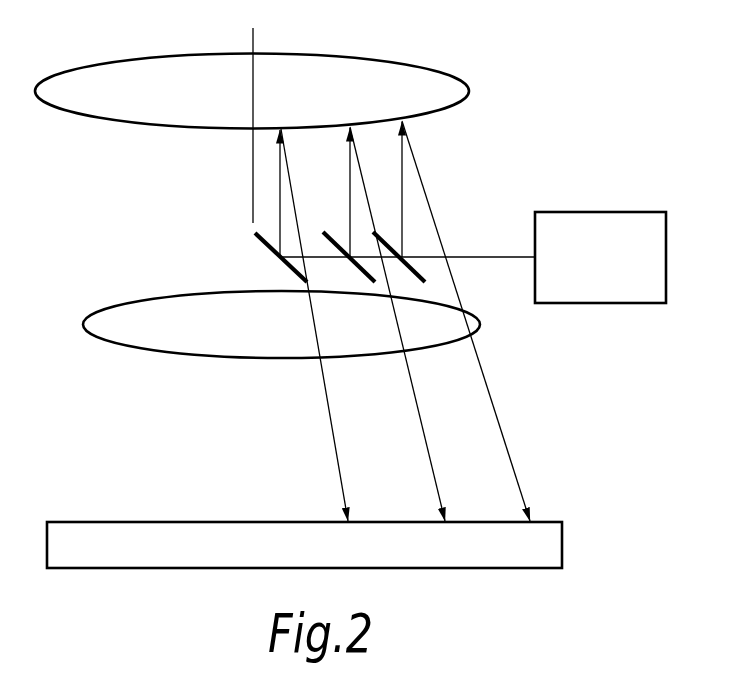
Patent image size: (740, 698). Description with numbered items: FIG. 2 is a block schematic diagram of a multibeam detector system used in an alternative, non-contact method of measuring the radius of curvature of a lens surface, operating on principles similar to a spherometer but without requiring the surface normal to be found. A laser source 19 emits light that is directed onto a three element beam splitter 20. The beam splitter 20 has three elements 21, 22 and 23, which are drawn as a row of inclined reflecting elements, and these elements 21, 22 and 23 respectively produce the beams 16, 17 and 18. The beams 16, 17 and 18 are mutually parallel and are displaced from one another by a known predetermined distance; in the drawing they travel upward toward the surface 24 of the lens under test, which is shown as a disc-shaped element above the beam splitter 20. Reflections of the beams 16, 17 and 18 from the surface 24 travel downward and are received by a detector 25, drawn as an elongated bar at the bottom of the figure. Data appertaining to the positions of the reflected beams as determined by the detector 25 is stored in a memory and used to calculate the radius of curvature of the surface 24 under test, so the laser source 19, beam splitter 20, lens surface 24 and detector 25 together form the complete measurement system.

The parallel beam 16 is at (280, 180).
The parallel beam 17 is at (350, 180).
The parallel beam 18 is at (403, 173).
The laser source 19 is at (618, 212).
The three element beam splitter 20 is at (338, 260).
The beam splitter element 21 is at (279, 262).
The beam splitter element 22 is at (364, 272).
The beam splitter element 23 is at (417, 273).
The surface of the lens under test 24 is at (438, 71).
The detector 25 is at (110, 522).